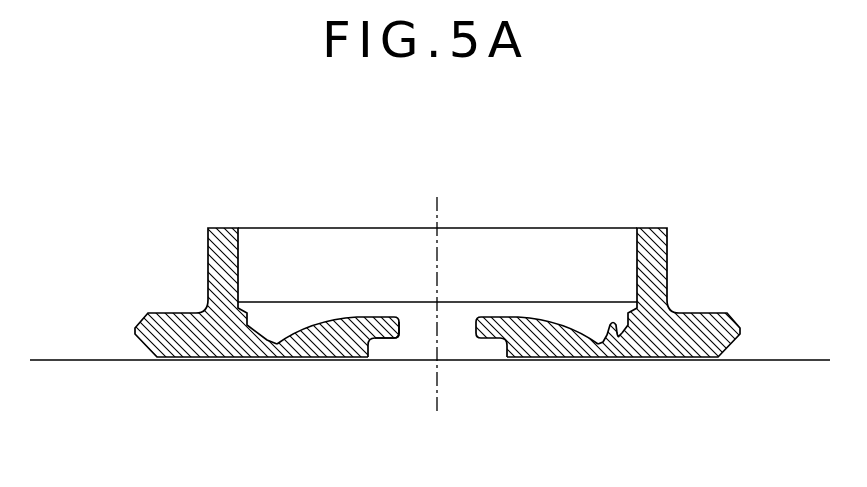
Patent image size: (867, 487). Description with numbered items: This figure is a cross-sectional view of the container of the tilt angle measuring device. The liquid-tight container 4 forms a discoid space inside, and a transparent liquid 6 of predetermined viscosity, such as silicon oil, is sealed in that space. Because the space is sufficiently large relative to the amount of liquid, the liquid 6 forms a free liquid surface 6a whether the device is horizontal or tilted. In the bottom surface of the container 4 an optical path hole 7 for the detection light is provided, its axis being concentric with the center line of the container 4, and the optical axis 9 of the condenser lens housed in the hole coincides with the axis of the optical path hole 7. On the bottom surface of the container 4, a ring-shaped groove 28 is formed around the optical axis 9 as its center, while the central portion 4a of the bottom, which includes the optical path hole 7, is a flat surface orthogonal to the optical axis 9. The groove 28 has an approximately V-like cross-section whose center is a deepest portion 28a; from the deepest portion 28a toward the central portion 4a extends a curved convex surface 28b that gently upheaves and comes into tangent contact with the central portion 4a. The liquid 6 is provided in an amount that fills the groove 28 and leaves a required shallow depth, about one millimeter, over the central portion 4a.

The container 4 is at (668, 248).
The central portion 4a is at (368, 322).
The transparent liquid 6 is at (303, 312).
The free liquid surface 6a is at (495, 300).
The optical path hole 7 is at (413, 327).
The optical axis 9 is at (437, 209).
The ring-shaped groove 28 is at (579, 311).
The deepest portion 28a is at (603, 345).
The curved convex surface 28b is at (563, 327).